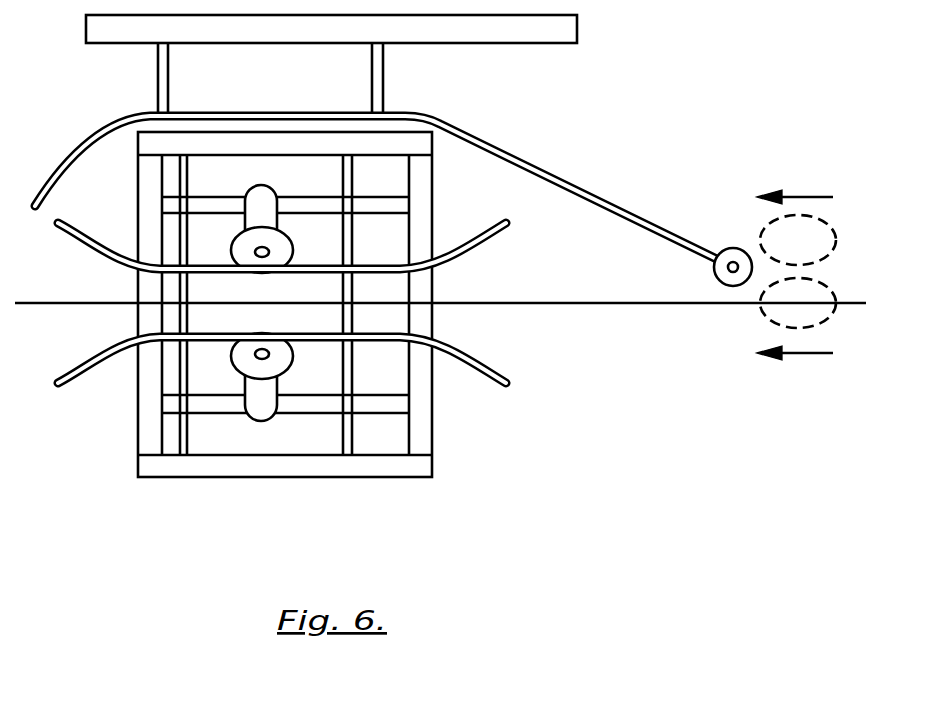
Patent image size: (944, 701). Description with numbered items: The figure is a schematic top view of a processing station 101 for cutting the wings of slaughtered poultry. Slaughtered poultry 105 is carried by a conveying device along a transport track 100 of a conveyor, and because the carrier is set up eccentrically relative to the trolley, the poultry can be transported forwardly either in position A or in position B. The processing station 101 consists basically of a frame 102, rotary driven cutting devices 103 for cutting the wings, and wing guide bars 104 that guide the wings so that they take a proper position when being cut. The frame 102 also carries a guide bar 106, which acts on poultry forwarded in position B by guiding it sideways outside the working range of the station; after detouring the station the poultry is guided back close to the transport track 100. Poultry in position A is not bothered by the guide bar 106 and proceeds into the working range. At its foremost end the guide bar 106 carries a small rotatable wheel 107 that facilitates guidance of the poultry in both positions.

The transport track 100 is at (600, 305).
The processing station 101 is at (317, 299).
The frame 102 is at (472, 30).
The rotary driven cutting device 103 is at (250, 247).
The wing guide bar 104 is at (462, 255).
The slaughtered poultry 105 is at (772, 238).
The guide bar 106 is at (505, 147).
The rotatable wheel 107 is at (715, 273).